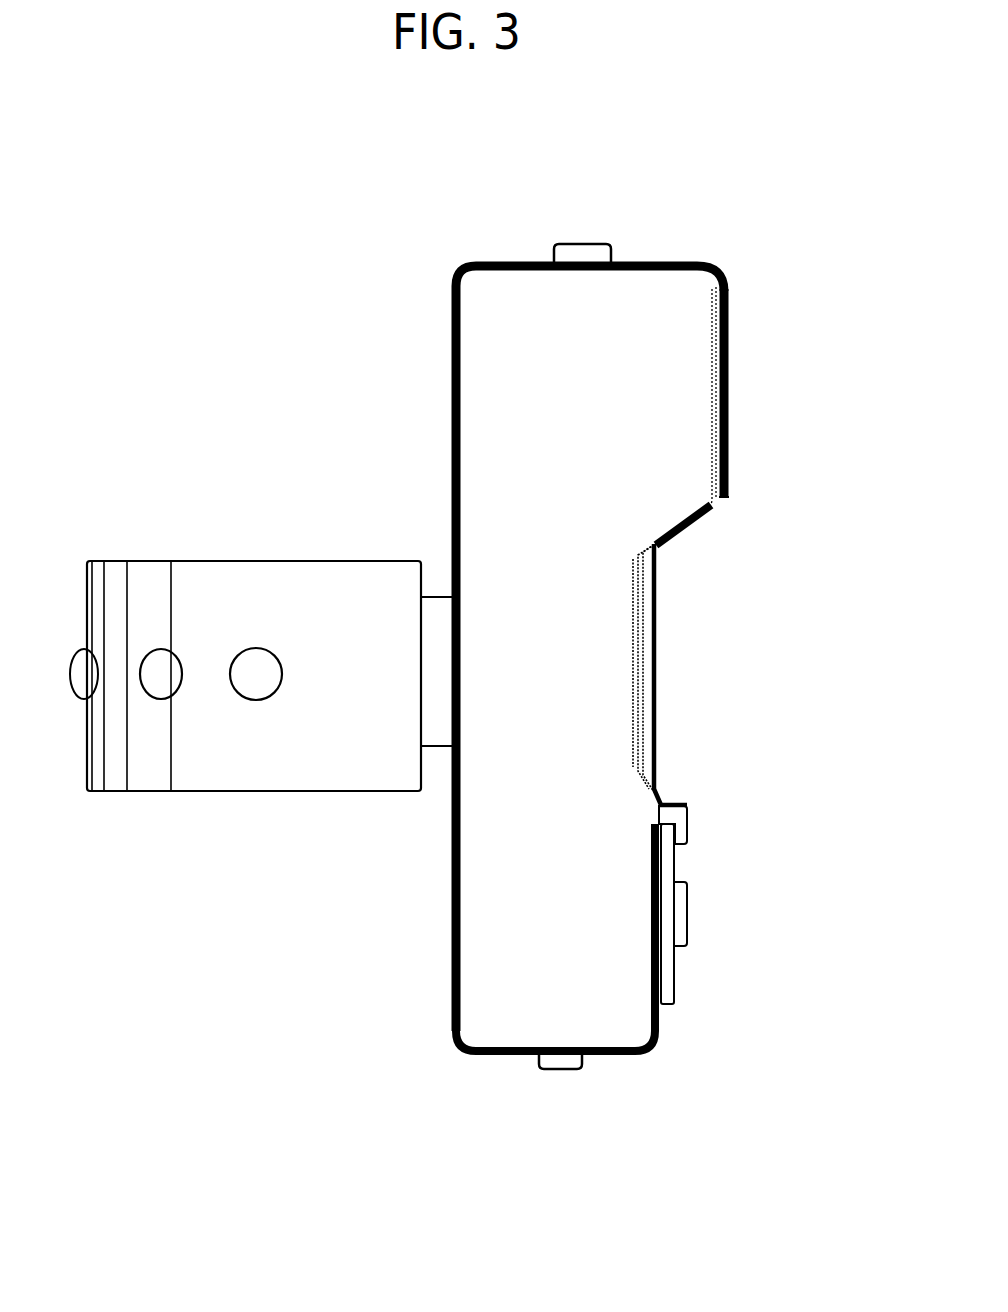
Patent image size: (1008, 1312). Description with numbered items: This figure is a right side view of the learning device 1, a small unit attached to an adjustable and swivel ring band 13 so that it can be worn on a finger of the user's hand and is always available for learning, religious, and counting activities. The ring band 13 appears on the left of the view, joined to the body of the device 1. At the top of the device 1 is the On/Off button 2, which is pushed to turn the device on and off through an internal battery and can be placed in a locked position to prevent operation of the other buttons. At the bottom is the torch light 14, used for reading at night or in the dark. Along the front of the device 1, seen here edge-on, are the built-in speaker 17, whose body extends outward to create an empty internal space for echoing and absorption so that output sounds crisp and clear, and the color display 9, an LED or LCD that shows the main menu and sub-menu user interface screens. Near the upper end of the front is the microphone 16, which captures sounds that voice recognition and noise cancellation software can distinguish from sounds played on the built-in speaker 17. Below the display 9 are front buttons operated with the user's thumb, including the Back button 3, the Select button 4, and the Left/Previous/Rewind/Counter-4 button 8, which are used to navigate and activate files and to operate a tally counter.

The device 1 is at (438, 931).
The On/Off button 2 is at (540, 252).
The Back button 3 is at (708, 825).
The Select button 4 is at (708, 900).
The Left/Previous/Rewind/Counter-4 button 8 is at (691, 984).
The color display 9 is at (665, 693).
The adjustable and swivel ring band 13 is at (219, 603).
The torch light 14 is at (572, 1081).
The microphone 16 is at (725, 256).
The built-in speaker 17 is at (747, 344).